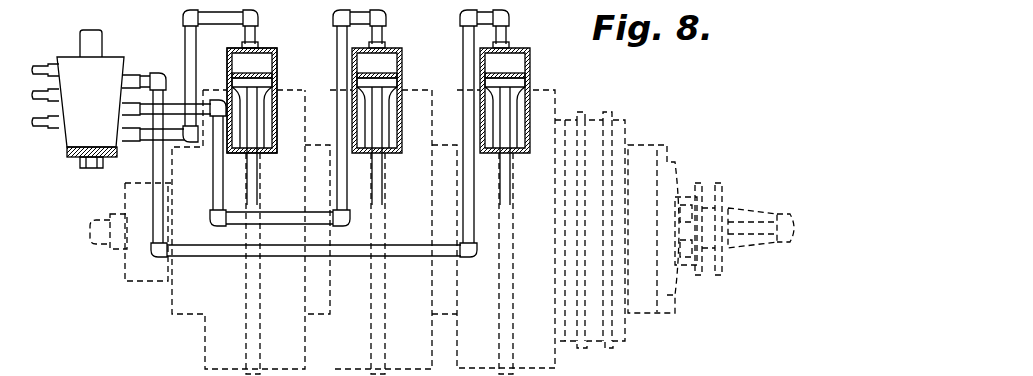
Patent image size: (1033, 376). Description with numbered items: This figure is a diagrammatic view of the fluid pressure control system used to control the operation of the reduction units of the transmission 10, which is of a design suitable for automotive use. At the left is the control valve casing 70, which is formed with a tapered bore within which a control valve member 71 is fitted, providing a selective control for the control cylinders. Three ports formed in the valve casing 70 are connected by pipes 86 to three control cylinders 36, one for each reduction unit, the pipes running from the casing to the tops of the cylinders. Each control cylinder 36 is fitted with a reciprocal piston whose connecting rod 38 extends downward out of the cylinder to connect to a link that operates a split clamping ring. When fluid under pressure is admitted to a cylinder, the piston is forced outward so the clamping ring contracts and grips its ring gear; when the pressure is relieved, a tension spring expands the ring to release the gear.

The transmission 10 is at (172, 302).
The control cylinder 36 is at (277, 62).
The connecting rod 38 is at (258, 176).
The control valve casing 70 is at (86, 112).
The control valve member 71 is at (72, 57).
The pipes 86 is at (185, 48).